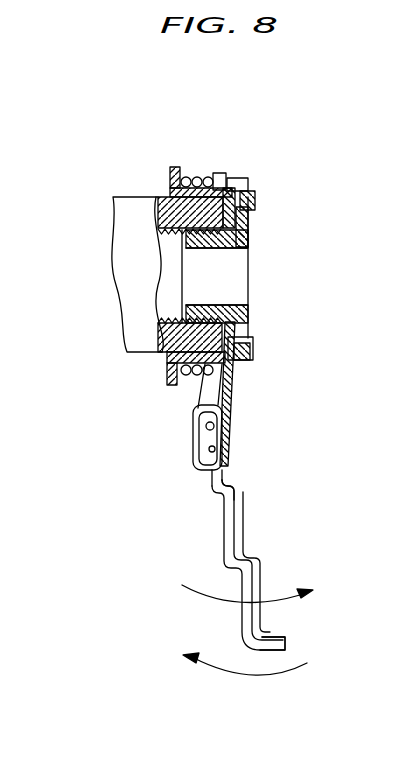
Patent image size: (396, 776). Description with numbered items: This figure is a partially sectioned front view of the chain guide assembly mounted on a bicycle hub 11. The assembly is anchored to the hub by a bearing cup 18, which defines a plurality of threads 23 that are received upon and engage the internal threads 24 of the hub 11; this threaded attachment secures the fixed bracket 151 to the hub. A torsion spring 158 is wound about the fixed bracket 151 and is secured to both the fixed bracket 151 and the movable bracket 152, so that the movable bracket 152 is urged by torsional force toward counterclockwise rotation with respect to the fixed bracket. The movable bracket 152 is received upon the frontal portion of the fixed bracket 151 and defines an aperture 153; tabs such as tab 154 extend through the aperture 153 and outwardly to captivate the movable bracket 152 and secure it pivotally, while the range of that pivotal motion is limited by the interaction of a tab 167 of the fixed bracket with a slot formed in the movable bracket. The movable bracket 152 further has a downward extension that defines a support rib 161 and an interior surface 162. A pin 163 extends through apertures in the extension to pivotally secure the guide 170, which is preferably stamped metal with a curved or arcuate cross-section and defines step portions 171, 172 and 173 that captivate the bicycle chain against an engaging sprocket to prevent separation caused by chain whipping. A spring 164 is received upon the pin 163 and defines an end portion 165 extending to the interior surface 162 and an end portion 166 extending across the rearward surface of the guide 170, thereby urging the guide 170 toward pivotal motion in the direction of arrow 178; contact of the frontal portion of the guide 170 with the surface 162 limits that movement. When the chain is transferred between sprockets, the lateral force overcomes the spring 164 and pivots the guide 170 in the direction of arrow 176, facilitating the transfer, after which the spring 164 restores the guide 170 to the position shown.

The hub 11 is at (137, 205).
The internal threads 24 is at (172, 308).
The threads 23 is at (220, 303).
The bearing cup 18 is at (248, 320).
The fixed bracket 151 is at (173, 167).
The torsion spring 158 is at (197, 176).
The tab 167 is at (220, 173).
The movable bracket 152 is at (245, 178).
The aperture 153 is at (254, 198).
The tab 154 is at (252, 212).
The support rib 161 is at (203, 406).
The end portion 165 is at (240, 380).
The spring 164 is at (206, 427).
The pin 163 is at (195, 435).
The interior surface 162 is at (228, 452).
The end portion 166 is at (205, 476).
The guide 170 is at (226, 523).
The step portion 171 is at (240, 486).
The step portion 172 is at (254, 563).
The arrow 178 is at (276, 588).
The step portion 173 is at (283, 634).
The arrow 176 is at (278, 677).